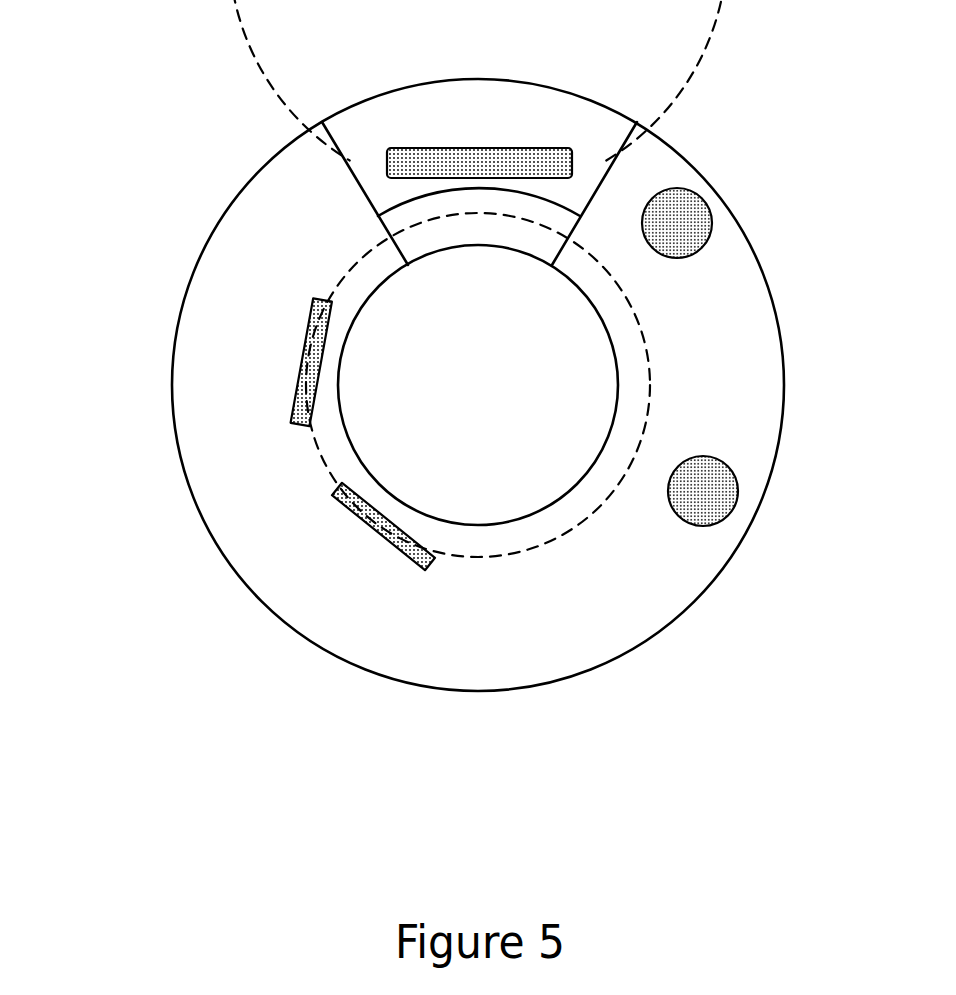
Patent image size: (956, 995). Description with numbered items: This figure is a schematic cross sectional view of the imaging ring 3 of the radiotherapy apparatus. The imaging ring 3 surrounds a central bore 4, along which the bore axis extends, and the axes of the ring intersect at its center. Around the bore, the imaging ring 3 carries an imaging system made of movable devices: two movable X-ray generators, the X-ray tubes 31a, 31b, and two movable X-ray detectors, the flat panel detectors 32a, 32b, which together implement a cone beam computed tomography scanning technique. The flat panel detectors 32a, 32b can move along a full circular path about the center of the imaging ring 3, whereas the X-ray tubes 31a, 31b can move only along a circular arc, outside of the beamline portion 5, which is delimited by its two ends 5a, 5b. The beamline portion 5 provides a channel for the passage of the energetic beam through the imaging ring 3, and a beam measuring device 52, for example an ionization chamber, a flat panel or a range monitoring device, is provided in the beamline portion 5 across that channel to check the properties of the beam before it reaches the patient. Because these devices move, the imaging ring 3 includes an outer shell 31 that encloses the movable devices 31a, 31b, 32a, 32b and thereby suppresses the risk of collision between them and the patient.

The imaging ring 3 is at (262, 647).
The central bore 4 is at (493, 450).
The beamline portion 5 is at (365, 137).
The end of beamline portion 5a is at (337, 150).
The end of beamline portion 5b is at (617, 157).
The outer shell 31 is at (192, 490).
The X-ray tube 31a is at (693, 232).
The X-ray tube 31b is at (708, 507).
The flat panel detector 32a is at (303, 410).
The flat panel detector 32b is at (418, 570).
The beam measuring device 52 is at (418, 148).